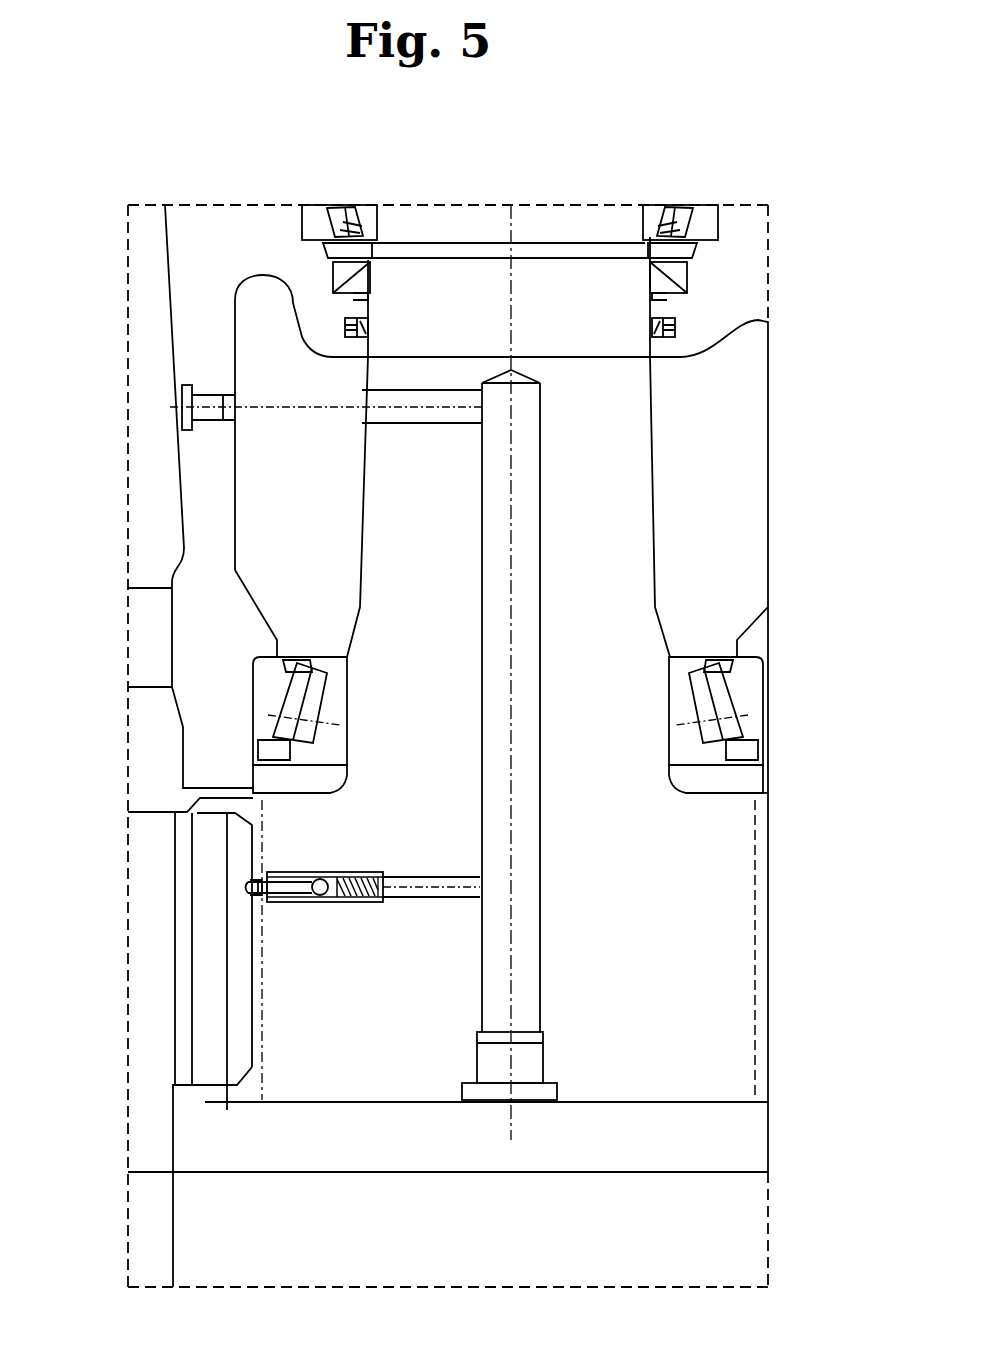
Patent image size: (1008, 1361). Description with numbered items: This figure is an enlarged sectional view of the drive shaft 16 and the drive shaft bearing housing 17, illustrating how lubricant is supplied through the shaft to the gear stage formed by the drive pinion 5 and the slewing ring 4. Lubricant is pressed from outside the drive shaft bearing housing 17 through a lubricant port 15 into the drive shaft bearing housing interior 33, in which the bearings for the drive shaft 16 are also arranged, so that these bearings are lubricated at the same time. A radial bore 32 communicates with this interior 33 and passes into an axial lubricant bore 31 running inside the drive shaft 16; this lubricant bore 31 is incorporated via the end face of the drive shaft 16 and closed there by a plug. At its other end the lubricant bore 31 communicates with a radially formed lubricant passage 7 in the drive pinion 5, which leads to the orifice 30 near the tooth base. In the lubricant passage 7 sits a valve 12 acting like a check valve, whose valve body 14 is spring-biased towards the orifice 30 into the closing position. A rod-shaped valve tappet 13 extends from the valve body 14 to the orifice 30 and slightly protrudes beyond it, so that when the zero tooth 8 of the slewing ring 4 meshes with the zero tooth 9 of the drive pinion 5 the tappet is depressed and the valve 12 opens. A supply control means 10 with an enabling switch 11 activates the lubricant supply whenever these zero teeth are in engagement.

The slewing ring 4 is at (133, 1005).
The drive pinion 5 is at (728, 998).
The lubricant passage 7 is at (428, 897).
The zero tooth 8 is at (248, 1077).
The zero tooth 9 is at (205, 1102).
The supply control means 10 is at (209, 903).
The enabling switch 11 is at (245, 895).
The valve 12 is at (327, 868).
The valve tappet 13 is at (277, 902).
The valve body 14 is at (318, 882).
The lubricant port 15 is at (188, 397).
The drive shaft 16 is at (635, 528).
The drive shaft bearing housing 17 is at (202, 332).
The orifice 30 is at (253, 867).
The lubricant bore 31 is at (527, 620).
The radial bore 32 is at (428, 440).
The drive shaft bearing housing interior 33 is at (730, 445).